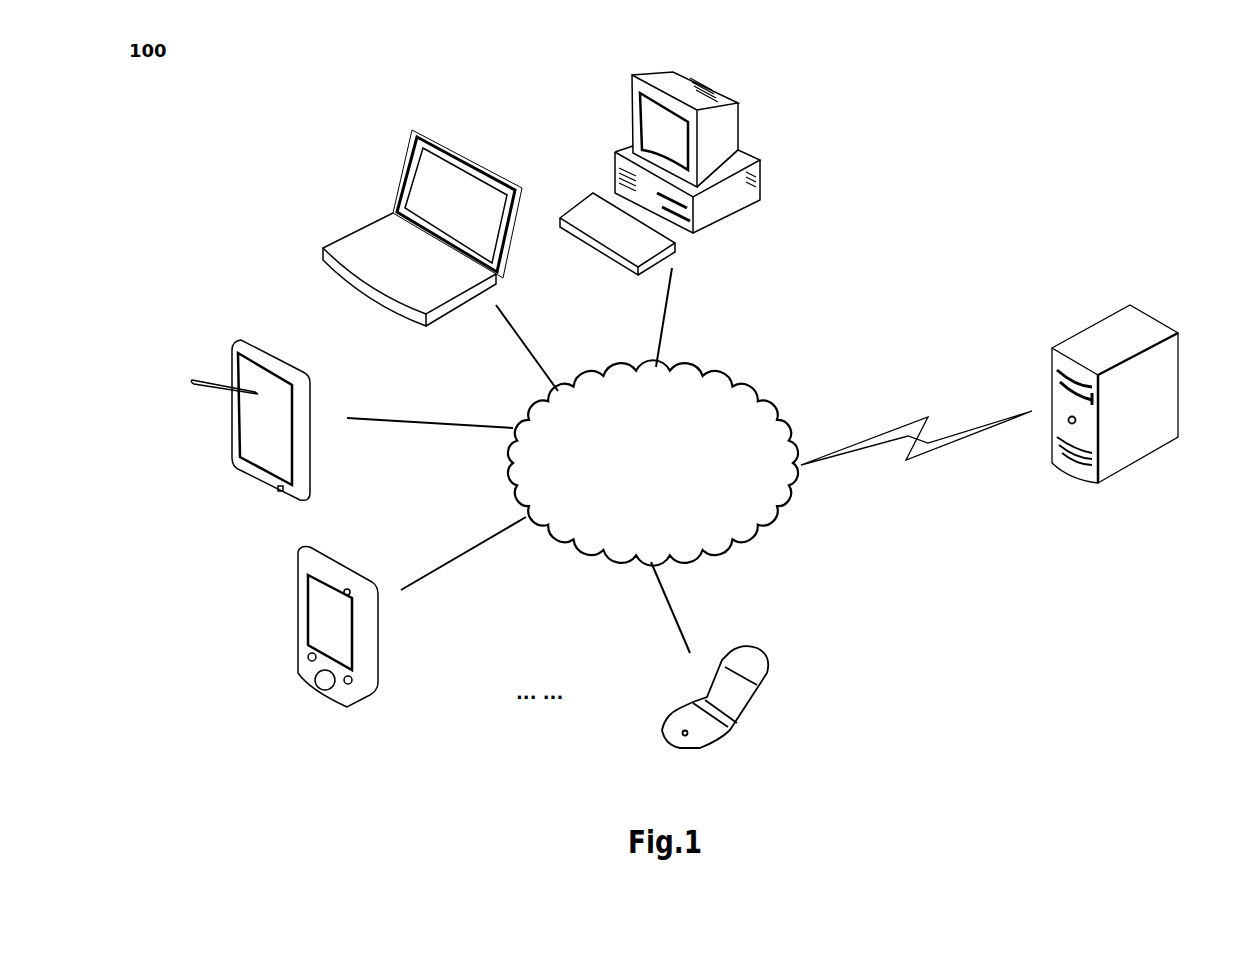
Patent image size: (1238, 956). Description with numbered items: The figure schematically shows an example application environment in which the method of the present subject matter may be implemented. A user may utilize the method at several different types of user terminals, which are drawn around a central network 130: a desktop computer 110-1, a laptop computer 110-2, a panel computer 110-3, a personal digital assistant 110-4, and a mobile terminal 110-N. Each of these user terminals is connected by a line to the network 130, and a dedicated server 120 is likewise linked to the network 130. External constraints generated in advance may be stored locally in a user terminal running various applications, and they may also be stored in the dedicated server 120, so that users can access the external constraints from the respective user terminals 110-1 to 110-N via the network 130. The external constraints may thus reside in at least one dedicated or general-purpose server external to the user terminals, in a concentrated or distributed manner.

The desktop computer 110-1 is at (656, 167).
The laptop computer 110-2 is at (418, 228).
The panel computer 110-3 is at (236, 416).
The personal digital assistant (PDA) 110-4 is at (307, 619).
The mobile terminal 110-N is at (765, 711).
The dedicated server 120 is at (1111, 386).
The network 130 is at (653, 462).